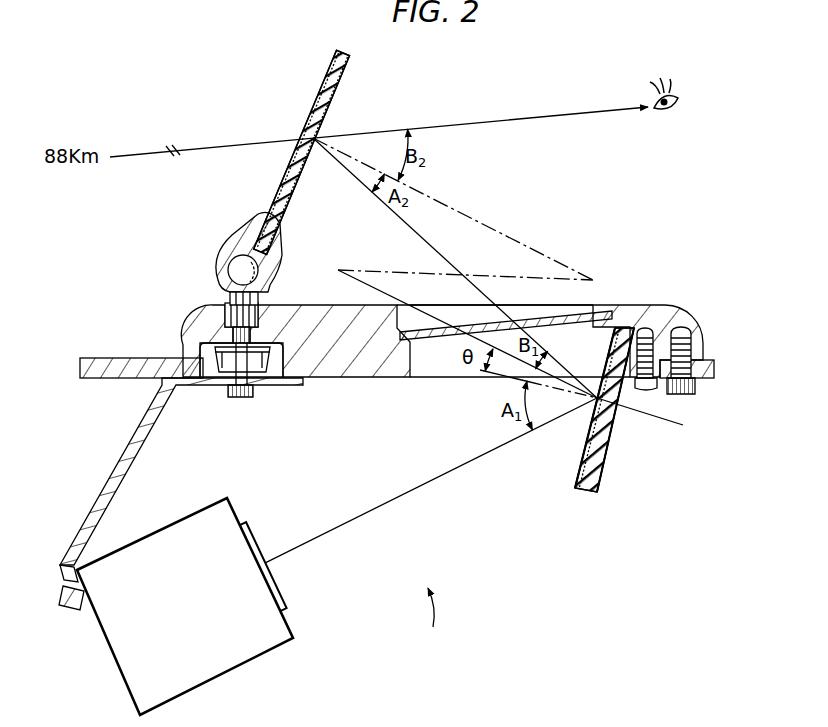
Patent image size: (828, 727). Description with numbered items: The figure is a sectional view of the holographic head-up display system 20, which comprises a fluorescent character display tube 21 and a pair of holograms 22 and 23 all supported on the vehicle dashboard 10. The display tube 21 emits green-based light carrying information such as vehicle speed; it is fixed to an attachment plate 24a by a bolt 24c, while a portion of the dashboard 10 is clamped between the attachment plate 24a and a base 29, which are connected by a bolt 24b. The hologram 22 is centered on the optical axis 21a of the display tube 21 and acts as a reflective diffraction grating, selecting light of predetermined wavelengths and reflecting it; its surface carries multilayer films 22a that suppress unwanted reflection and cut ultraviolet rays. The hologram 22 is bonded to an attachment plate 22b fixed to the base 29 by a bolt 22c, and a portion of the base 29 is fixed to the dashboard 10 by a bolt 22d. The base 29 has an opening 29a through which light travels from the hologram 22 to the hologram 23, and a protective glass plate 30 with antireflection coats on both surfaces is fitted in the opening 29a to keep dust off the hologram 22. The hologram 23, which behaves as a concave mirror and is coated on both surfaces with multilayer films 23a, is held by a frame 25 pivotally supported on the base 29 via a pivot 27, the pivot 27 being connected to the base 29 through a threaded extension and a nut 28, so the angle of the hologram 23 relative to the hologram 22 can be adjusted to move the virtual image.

The vehicle dashboard 10 is at (108, 358).
The holographic head-up display system 20 is at (428, 621).
The fluorescent character display tube 21 is at (250, 650).
The optical axis 21a is at (375, 513).
The hologram 22 is at (582, 493).
The multilayer films 22a is at (577, 468).
The attachment plate 22b is at (610, 455).
The bolt 22c is at (650, 390).
The bolt 22d is at (693, 382).
The hologram 23 is at (345, 70).
The multilayer films 23a is at (320, 88).
The attachment plate 24a is at (130, 457).
The bolt 24b is at (243, 395).
The bolt 24c is at (68, 608).
The frame 25 is at (268, 263).
The pivot 27 is at (233, 258).
The nut 28 is at (268, 372).
The base 29 is at (376, 368).
The opening 29a is at (535, 310).
The protective glass plate 30 is at (438, 337).